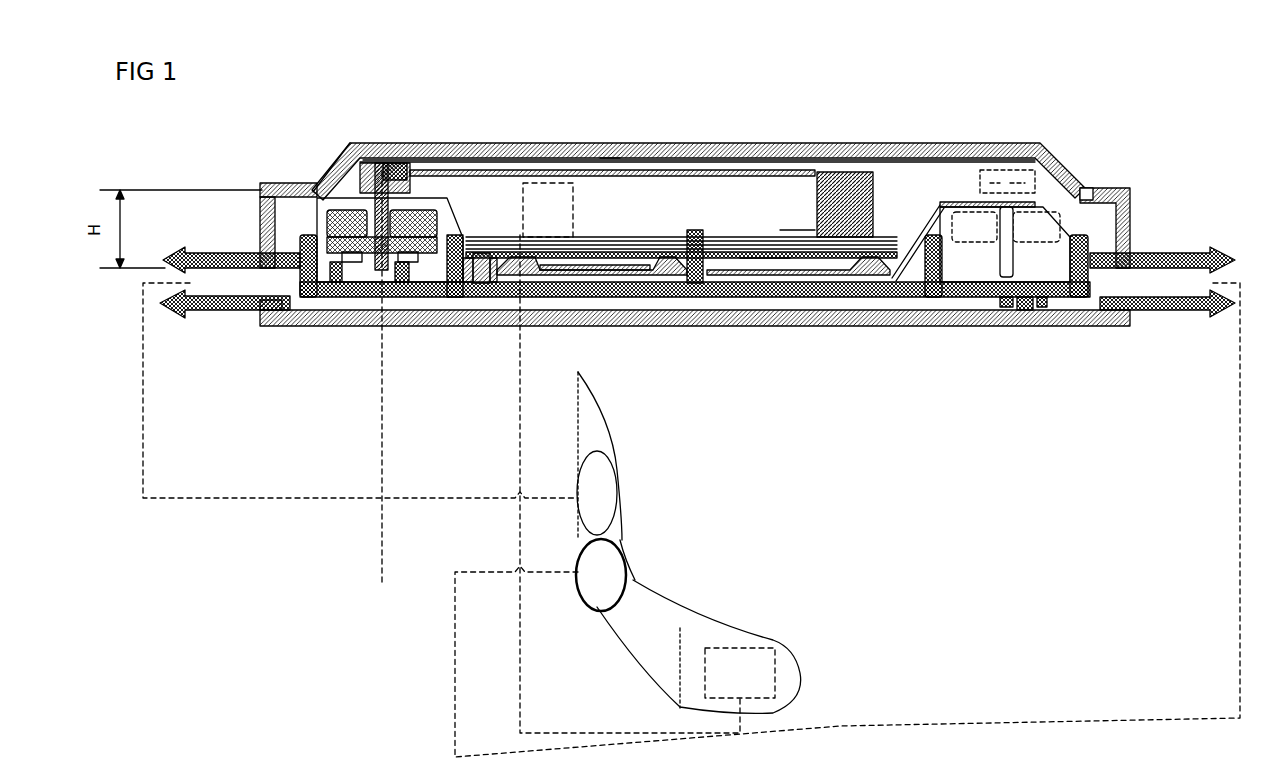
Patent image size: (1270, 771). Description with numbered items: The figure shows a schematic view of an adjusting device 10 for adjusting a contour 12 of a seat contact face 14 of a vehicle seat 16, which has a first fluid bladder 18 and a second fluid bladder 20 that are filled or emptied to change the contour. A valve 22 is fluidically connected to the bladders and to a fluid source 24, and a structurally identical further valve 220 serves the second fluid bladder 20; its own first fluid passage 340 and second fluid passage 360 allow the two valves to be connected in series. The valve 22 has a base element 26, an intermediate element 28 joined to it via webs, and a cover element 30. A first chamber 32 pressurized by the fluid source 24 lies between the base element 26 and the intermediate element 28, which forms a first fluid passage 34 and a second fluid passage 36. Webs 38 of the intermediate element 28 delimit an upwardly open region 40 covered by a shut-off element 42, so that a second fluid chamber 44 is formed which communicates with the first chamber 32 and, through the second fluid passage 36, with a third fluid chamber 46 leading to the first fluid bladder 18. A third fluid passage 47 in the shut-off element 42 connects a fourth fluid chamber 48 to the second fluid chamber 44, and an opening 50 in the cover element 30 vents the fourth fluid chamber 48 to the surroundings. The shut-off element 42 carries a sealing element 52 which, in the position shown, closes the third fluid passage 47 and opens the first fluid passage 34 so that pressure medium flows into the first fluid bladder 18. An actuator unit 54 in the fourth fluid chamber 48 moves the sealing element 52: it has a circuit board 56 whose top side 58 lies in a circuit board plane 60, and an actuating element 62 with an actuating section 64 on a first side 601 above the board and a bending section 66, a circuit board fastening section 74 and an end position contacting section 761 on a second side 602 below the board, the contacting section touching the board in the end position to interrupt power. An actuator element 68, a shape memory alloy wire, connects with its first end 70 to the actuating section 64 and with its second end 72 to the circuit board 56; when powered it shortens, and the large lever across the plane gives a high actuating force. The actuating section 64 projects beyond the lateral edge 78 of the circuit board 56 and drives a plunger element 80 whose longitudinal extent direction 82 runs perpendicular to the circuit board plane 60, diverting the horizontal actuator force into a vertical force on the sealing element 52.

The adjusting device 10 is at (300, 615).
The contour 12 is at (620, 522).
The seat contact face 14 is at (637, 576).
The vehicle seat 16 is at (600, 376).
The first fluid bladder 18 is at (615, 450).
The second fluid bladder 20 is at (627, 543).
The valve 22 is at (700, 120).
The fluid source 24 is at (740, 648).
The base element 26 is at (445, 322).
The intermediate element 28 is at (243, 300).
The cover element 30 is at (435, 170).
The first chamber 32 is at (820, 326).
The first fluid passage 34 is at (380, 318).
The second fluid passage 36 is at (345, 320).
The webs 38 is at (300, 237).
The region 40 is at (312, 320).
The shut-off element 42 is at (335, 195).
The second fluid chamber 44 is at (402, 330).
The third fluid chamber 46 is at (215, 285).
The third fluid passage 47 is at (366, 150).
The fourth fluid chamber 48 is at (508, 200).
The opening 50 is at (300, 183).
The sealing element 52 is at (348, 138).
The actuator unit 54 is at (612, 206).
The circuit board 56 is at (752, 240).
The top side 58 is at (593, 233).
The circuit board plane 60 is at (905, 240).
The actuating element 62 is at (480, 300).
The actuating section 64 is at (400, 165).
The bending section 66 is at (560, 298).
The actuator element 68 is at (607, 165).
The first end 70 is at (395, 182).
The second end 72 is at (845, 172).
The circuit board fastening section 74 is at (688, 296).
The lateral edge 78 is at (488, 300).
The plunger element 80 is at (486, 260).
The longitudinal extent direction 82 is at (380, 425).
The further valve 220 is at (980, 352).
The first fluid passage 340 is at (1007, 310).
The second fluid passage 360 is at (1042, 310).
The first side 601 is at (797, 228).
The second side 602 is at (782, 297).
The spacer 761 is at (496, 300).